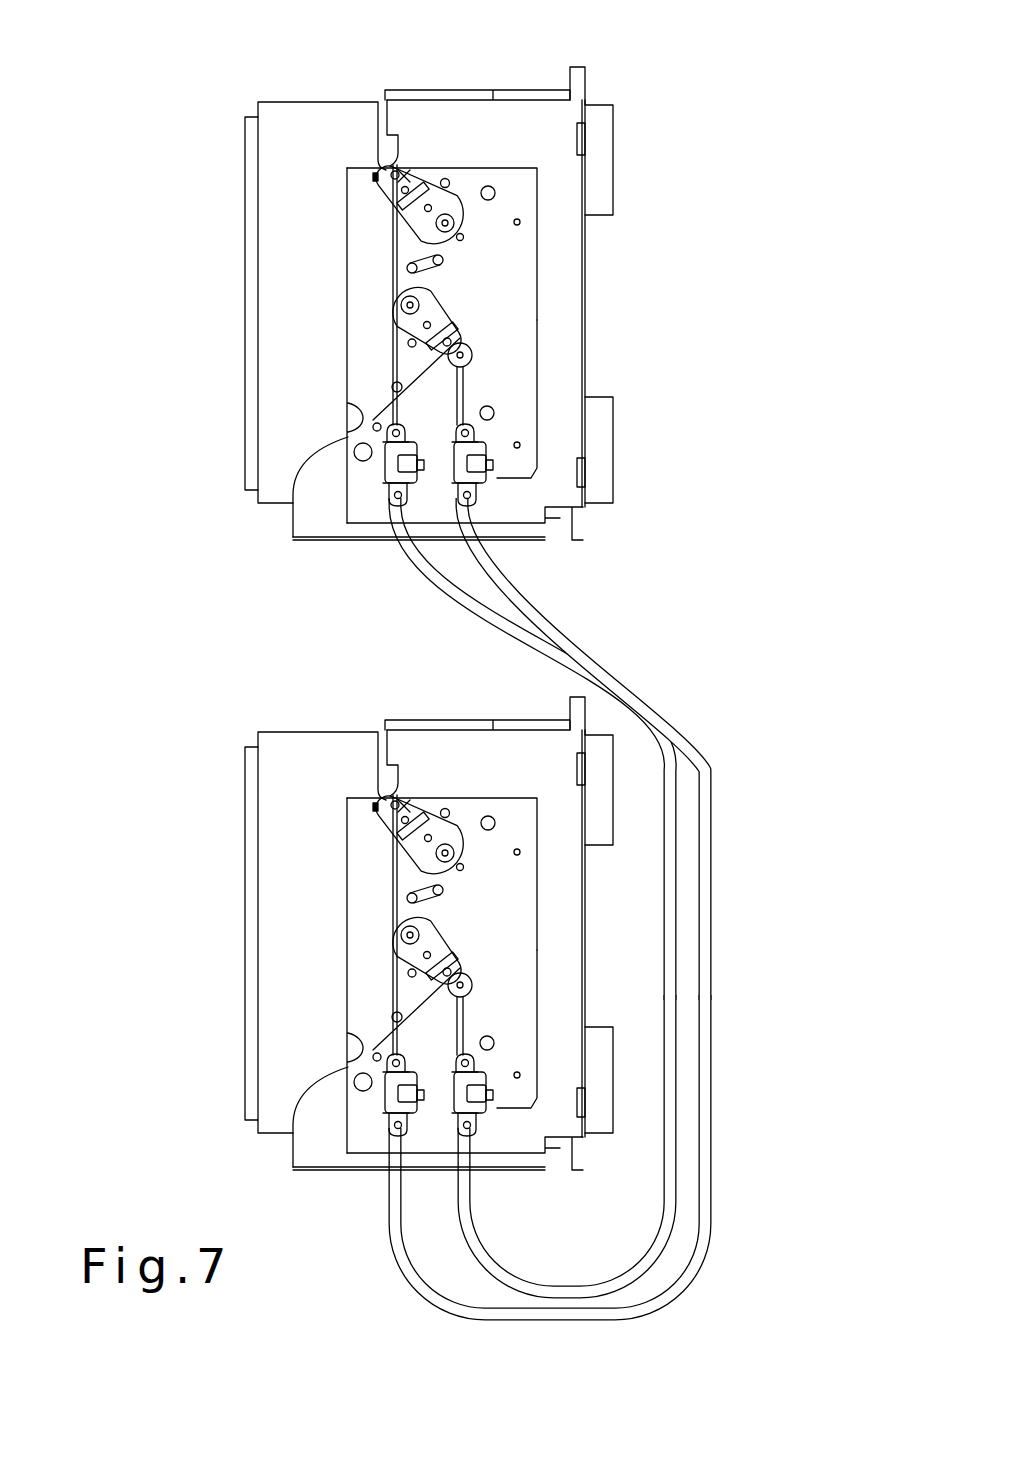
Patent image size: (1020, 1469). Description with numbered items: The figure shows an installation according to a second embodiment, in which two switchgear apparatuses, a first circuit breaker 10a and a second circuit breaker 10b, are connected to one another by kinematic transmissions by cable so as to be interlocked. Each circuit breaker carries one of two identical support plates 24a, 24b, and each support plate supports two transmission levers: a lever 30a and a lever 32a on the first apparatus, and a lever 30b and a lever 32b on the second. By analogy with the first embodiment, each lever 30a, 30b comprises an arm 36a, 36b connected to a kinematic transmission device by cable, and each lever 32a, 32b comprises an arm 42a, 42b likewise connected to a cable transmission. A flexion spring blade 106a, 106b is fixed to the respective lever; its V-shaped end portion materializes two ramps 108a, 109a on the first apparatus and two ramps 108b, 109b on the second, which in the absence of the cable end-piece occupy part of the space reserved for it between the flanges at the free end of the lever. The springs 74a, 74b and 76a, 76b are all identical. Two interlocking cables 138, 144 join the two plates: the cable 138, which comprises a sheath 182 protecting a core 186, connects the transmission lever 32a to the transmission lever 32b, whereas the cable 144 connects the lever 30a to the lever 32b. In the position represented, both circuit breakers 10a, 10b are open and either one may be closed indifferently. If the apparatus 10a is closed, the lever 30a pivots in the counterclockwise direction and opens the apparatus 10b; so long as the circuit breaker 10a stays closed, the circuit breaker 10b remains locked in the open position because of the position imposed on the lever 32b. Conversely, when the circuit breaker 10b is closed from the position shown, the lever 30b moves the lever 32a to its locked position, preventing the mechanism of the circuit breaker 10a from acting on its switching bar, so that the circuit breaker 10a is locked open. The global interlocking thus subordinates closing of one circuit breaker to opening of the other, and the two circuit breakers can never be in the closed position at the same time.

The circuit breaker 10a is at (270, 193).
The circuit breaker 10b is at (367, 917).
The support plate 24a is at (510, 465).
The support plate 24b is at (553, 1118).
The transmission lever 30a is at (520, 395).
The transmission lever 30b is at (577, 975).
The transmission lever 32a is at (522, 180).
The transmission lever 32b is at (574, 855).
The arm 36a is at (418, 335).
The arm 36b is at (365, 964).
The arm 42a is at (435, 192).
The arm 42b is at (430, 771).
The spring 74a is at (415, 268).
The spring 74b is at (355, 876).
The spring 76a is at (420, 262).
The spring 76b is at (547, 905).
The flexion spring blade 106a is at (448, 326).
The flexion spring blade 106b is at (558, 975).
The ramp 108a is at (463, 332).
The ramp 108b is at (564, 996).
The ramp 109a is at (373, 420).
The ramp 109b is at (292, 953).
The interlocking cable 138 is at (687, 671).
The interlocking cable 144 is at (457, 625).
The sheath 182 is at (565, 622).
The core 186 is at (467, 413).